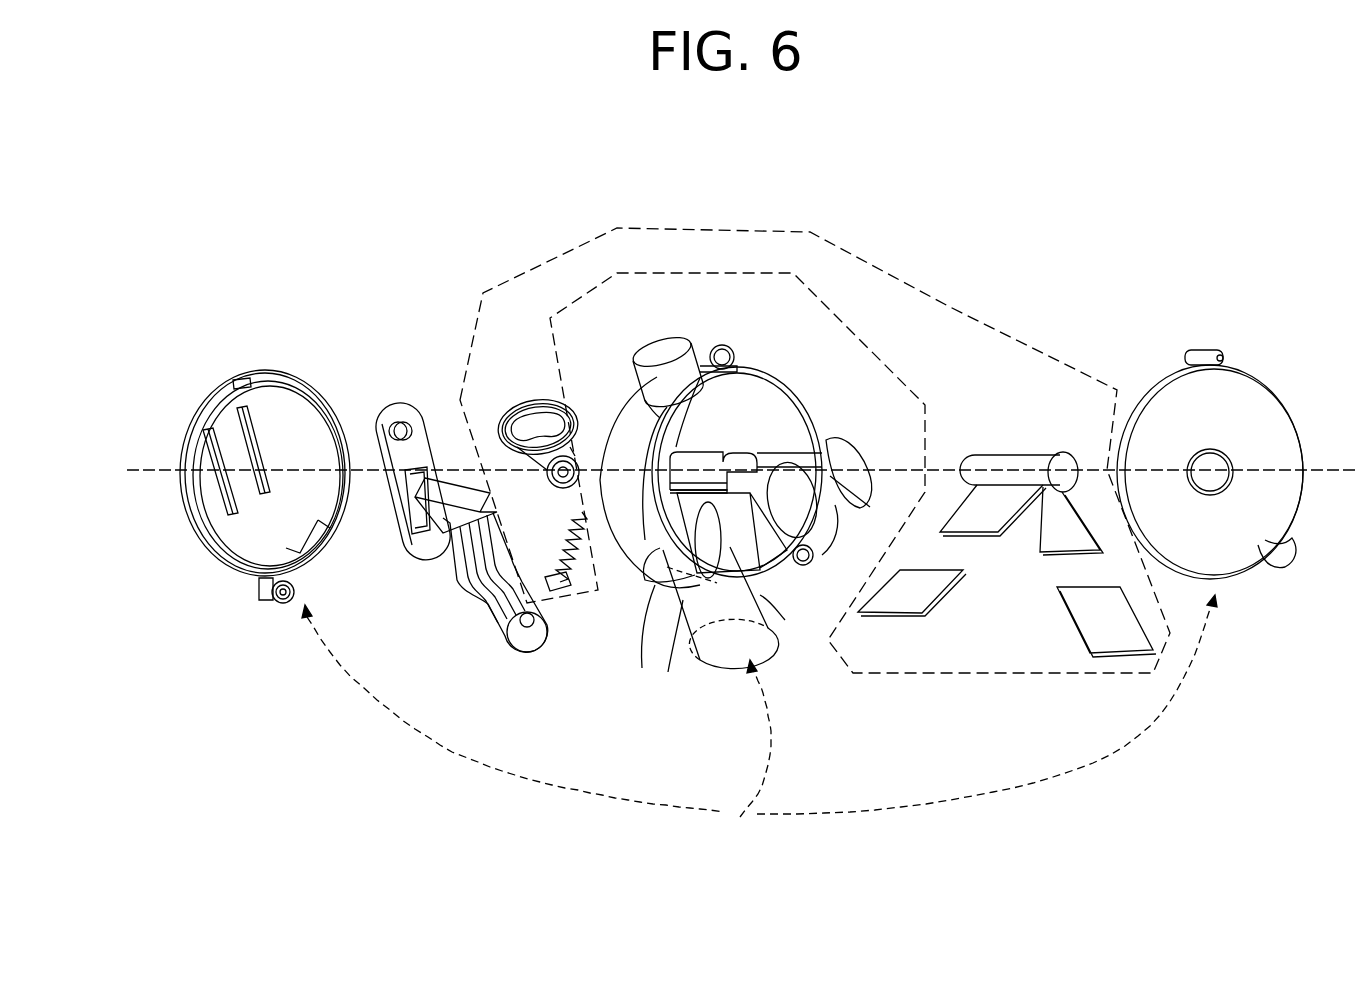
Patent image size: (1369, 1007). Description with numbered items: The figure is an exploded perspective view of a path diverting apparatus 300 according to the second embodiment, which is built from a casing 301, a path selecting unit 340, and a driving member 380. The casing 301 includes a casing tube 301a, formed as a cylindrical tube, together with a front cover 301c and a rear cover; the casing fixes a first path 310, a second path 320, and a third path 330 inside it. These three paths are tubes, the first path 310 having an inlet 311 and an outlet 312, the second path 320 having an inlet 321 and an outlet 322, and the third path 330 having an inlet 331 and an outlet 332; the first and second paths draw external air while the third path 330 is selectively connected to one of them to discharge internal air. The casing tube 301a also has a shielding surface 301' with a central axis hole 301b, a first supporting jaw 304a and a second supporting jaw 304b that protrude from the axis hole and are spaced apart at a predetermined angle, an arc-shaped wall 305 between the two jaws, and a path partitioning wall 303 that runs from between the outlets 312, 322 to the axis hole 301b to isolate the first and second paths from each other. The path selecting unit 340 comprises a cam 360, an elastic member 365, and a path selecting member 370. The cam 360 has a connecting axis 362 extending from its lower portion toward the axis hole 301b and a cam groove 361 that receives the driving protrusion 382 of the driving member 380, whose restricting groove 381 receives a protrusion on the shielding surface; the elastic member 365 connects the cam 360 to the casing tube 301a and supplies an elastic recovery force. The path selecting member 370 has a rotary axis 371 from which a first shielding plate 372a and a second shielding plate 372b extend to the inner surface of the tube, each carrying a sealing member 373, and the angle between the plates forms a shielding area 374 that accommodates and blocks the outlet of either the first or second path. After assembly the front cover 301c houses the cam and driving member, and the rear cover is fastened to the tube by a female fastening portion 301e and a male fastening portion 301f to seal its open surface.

The path diverting apparatus 300 is at (775, 886).
The casing 301 is at (835, 656).
The shielding surface 301' is at (734, 392).
The casing tube 301a is at (590, 410).
The axis hole 301b is at (703, 545).
The front cover 301c is at (178, 530).
The female fastening portion 301e is at (733, 345).
The male fastening portion 301f is at (1205, 352).
The path partitioning wall 303 is at (760, 545).
The first supporting jaw 304a is at (653, 553).
The second supporting jaw 304b is at (762, 415).
The arc-shaped wall 305 is at (745, 420).
The first path 310 is at (660, 590).
The inlet 311 is at (736, 645).
The outlet 312 is at (707, 545).
The second path 320 is at (833, 510).
The inlet 321 is at (848, 462).
The outlet 322 is at (808, 565).
The third path 330 is at (655, 340).
The inlet 331 is at (653, 387).
The outlet 332 is at (688, 345).
The path selecting unit 340 is at (815, 442).
The cam 360 is at (542, 395).
The cam groove 361 is at (530, 410).
The connecting axis 362 is at (556, 489).
The elastic member 365 is at (571, 593).
The path selecting member 370 is at (1045, 443).
The rotary axis 371 is at (1010, 457).
The first shielding plate 372a is at (987, 510).
The second shielding plate 372b is at (1093, 513).
The sealing member 373 is at (900, 610).
The shielding area 374 is at (1050, 516).
The driving member 380 is at (455, 578).
The restricting groove 381 is at (405, 505).
The driving protrusion 382 is at (389, 405).